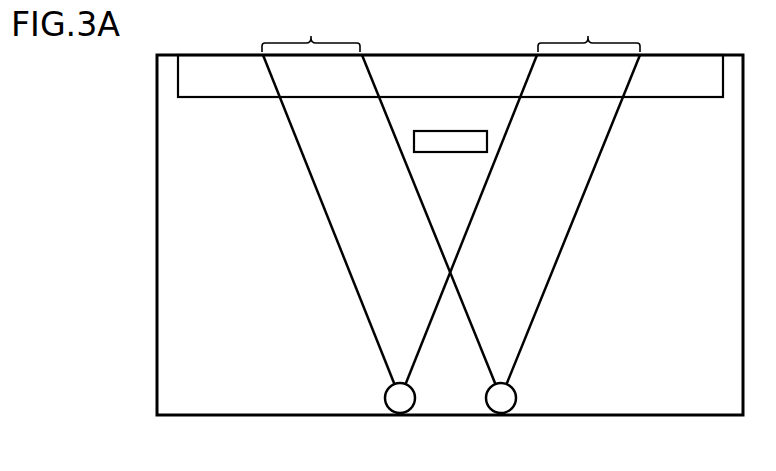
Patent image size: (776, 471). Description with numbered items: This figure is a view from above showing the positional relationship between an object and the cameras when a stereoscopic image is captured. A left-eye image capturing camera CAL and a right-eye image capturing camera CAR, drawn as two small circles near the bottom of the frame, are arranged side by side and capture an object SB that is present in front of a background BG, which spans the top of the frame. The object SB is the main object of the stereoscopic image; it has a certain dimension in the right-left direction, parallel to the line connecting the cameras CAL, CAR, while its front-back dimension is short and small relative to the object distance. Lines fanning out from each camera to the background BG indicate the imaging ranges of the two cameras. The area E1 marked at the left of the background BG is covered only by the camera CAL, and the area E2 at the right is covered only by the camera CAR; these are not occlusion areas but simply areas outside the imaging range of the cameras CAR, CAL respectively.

The background BG is at (668, 97).
The object SB is at (445, 152).
The left-eye image capturing camera CAL is at (386, 403).
The right-eye image capturing camera CAR is at (515, 403).
The area E1 is at (311, 29).
The area E2 is at (589, 29).